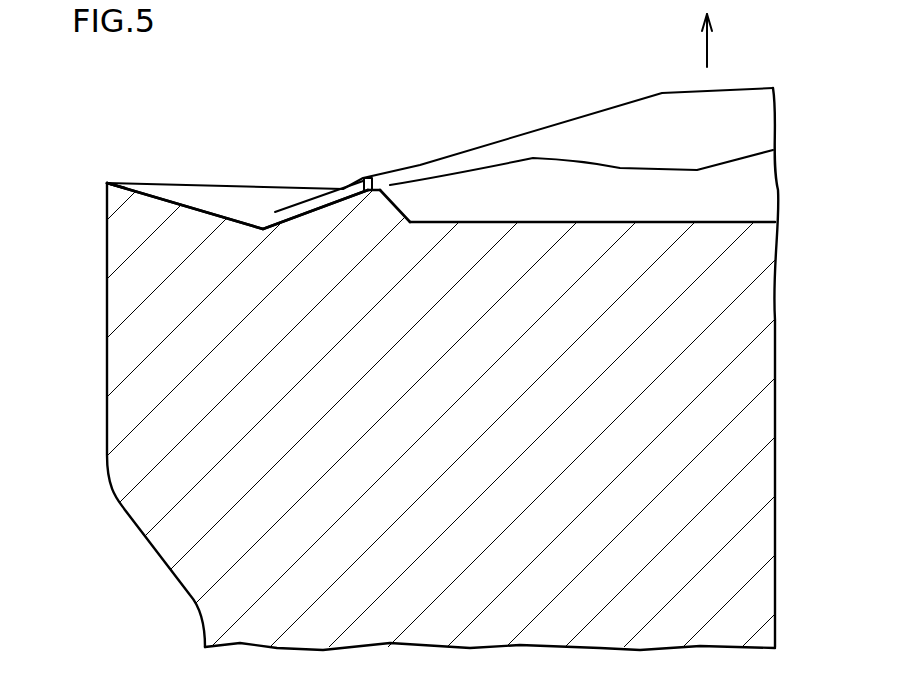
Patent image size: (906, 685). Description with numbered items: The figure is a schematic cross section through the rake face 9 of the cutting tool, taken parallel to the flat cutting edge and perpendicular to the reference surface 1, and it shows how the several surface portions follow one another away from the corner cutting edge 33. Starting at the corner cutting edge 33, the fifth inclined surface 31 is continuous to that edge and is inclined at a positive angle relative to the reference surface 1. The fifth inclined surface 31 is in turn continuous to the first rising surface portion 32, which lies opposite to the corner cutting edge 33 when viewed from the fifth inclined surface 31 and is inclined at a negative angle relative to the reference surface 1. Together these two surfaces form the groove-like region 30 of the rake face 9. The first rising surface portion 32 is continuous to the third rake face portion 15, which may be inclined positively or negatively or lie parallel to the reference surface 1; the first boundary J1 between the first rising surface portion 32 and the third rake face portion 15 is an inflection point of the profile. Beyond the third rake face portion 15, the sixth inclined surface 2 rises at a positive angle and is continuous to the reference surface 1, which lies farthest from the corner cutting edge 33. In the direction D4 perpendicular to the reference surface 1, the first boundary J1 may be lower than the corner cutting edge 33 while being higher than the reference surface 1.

The reference surface 1 is at (550, 222).
The sixth inclined surface 2 is at (397, 204).
The rake face 9 is at (402, 81).
The third rake face portion 15 is at (370, 183).
The groove portion 30 is at (312, 113).
The fifth inclined surface 31 is at (196, 210).
The first rising surface portion 32 is at (330, 210).
The corner cutting edge 33 is at (107, 182).
The first boundary J1 is at (358, 186).
The direction D4 is at (708, 42).